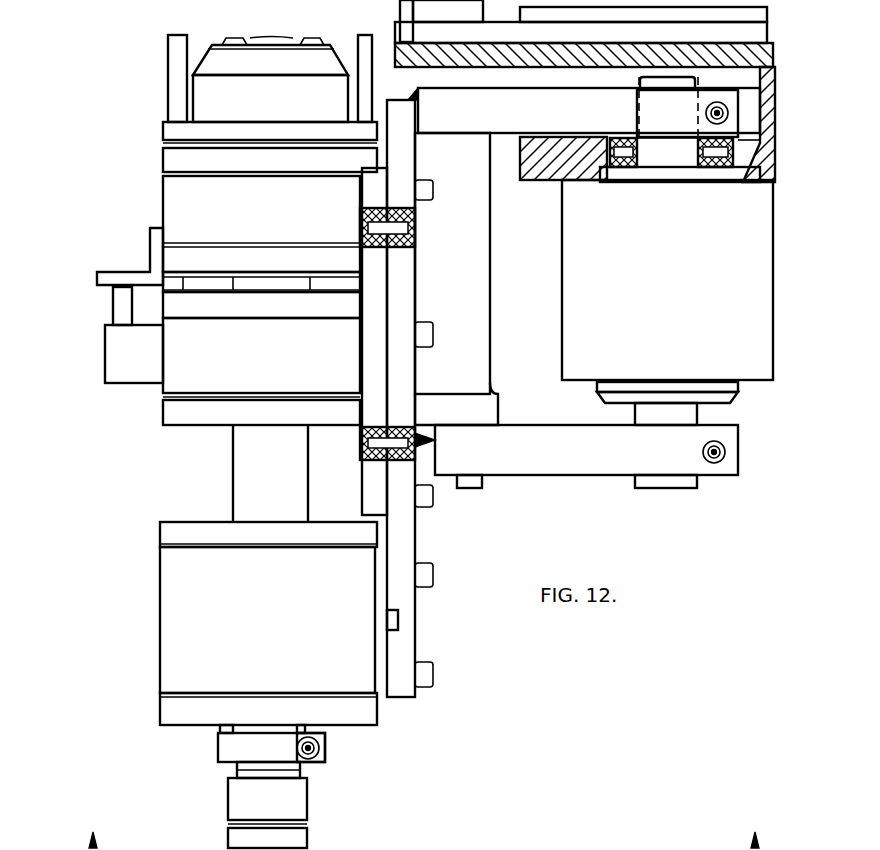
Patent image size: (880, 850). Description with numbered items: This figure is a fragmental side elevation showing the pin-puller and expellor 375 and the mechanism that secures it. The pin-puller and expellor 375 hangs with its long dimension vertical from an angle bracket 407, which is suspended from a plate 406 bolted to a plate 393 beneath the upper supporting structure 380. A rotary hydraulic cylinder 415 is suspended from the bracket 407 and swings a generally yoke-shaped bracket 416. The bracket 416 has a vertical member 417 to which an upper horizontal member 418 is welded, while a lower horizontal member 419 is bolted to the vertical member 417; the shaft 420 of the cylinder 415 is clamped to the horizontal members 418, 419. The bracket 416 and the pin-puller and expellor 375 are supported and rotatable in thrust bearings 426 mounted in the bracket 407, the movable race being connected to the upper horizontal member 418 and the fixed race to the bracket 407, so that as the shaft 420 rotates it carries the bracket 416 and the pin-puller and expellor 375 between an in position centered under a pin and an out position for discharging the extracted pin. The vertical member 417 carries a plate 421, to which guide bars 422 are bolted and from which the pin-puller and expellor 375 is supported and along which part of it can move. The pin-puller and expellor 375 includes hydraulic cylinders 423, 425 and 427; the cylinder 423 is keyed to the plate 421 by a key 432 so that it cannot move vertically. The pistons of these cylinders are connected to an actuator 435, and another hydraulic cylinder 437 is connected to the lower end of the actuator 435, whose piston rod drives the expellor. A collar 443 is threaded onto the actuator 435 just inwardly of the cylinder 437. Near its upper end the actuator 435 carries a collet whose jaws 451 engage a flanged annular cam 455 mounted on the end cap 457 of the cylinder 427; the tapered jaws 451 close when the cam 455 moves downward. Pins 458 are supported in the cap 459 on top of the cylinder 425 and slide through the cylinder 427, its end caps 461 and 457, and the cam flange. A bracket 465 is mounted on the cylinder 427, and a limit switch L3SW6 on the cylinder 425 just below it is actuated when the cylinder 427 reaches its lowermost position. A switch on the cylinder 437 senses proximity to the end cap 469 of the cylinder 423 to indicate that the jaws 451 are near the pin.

The pin-puller and expellor 375 is at (154, 40).
The jaws of the collet 451 is at (256, 40).
The pins 458 is at (170, 76).
The flanged annular cam 455 is at (202, 96).
The end cap 457 is at (168, 160).
The hydraulic cylinder 427 is at (155, 208).
The end cap 461 is at (255, 256).
The bracket 465 is at (97, 278).
The limit switch L3SW6 is at (128, 374).
The hydraulic cylinder 425 is at (178, 378).
The cap 459 is at (270, 318).
The end cap 469 is at (215, 522).
The hydraulic cylinder 423 is at (170, 605).
The actuator 435 is at (226, 734).
The collar 443 is at (226, 752).
The hydraulic cylinder 437 is at (222, 802).
The top plate 380 is at (425, 12).
The plate 393 is at (560, 36).
The plate 406 is at (450, 60).
The plate 421 is at (405, 270).
The guide bars 422 is at (372, 330).
The key 432 is at (398, 617).
The vertical member 417 is at (482, 221).
The upper horizontal member 418 is at (510, 134).
The shaft 420 is at (640, 90).
The thrust bearings 426 is at (746, 160).
The angle bracket 407 is at (776, 184).
The rotary hydraulic cylinder 415 is at (576, 282).
The lower horizontal member 419 is at (598, 456).
The bracket 416 is at (566, 478).